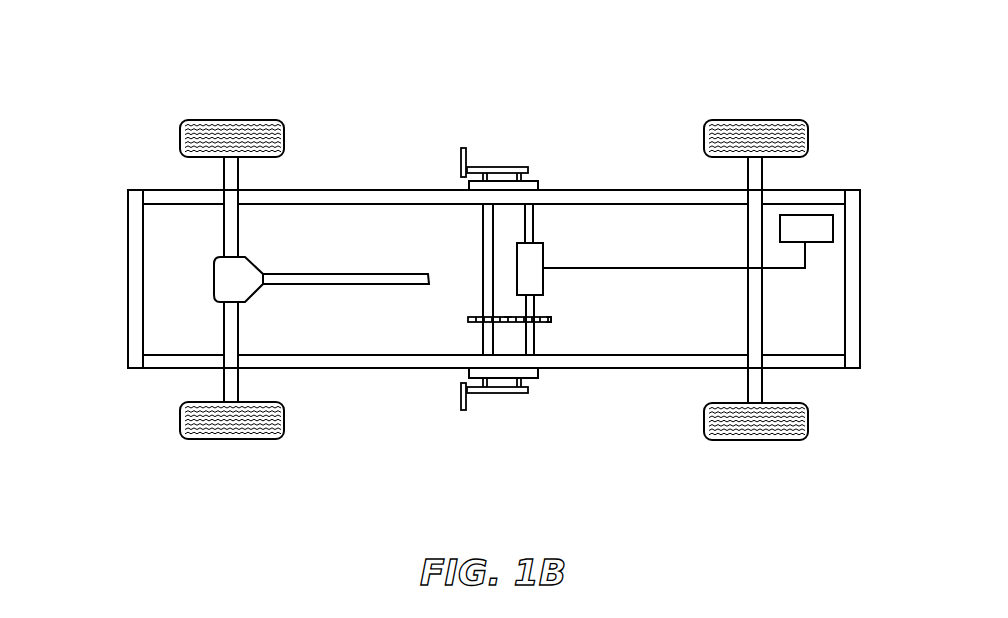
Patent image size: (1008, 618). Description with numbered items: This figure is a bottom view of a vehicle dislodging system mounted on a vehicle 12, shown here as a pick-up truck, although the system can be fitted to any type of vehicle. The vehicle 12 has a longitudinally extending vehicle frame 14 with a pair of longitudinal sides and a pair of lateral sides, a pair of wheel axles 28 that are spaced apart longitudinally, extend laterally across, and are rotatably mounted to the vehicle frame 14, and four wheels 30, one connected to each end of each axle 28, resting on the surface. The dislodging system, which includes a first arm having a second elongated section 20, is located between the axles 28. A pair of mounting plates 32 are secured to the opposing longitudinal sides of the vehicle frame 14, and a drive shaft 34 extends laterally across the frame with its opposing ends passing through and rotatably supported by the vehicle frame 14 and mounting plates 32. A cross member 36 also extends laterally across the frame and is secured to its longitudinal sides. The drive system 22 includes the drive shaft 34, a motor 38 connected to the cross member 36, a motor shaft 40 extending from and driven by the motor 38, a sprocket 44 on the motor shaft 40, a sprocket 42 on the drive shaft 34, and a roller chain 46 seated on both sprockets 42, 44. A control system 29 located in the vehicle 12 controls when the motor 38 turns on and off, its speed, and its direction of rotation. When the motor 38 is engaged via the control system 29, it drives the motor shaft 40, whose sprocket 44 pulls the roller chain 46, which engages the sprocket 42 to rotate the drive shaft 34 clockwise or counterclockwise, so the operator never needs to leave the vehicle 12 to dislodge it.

The vehicle 12 is at (135, 320).
The vehicle frame 14 is at (856, 320).
The second elongated section 20 is at (513, 167).
The drive system 22 is at (558, 283).
The wheel axle 28 is at (232, 320).
The control system 29 is at (818, 232).
The wheel 30 is at (231, 128).
The mounting plate 32 is at (538, 183).
The drive shaft 34 is at (487, 243).
The cross member 36 is at (534, 230).
The motor 38 is at (540, 256).
The motor shaft 40 is at (535, 306).
The sprocket 42 is at (468, 320).
The sprocket 44 is at (551, 321).
The roller chain 46 is at (508, 316).